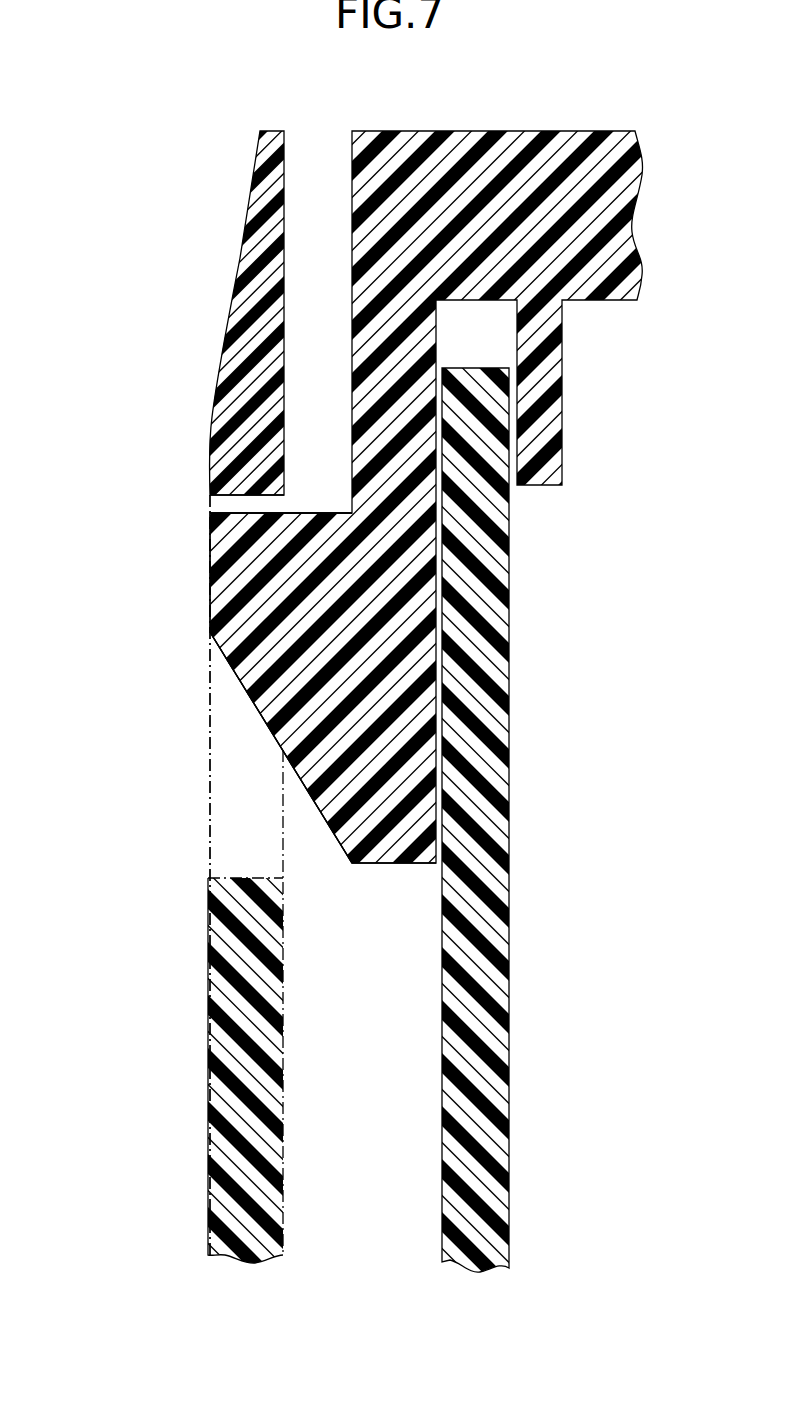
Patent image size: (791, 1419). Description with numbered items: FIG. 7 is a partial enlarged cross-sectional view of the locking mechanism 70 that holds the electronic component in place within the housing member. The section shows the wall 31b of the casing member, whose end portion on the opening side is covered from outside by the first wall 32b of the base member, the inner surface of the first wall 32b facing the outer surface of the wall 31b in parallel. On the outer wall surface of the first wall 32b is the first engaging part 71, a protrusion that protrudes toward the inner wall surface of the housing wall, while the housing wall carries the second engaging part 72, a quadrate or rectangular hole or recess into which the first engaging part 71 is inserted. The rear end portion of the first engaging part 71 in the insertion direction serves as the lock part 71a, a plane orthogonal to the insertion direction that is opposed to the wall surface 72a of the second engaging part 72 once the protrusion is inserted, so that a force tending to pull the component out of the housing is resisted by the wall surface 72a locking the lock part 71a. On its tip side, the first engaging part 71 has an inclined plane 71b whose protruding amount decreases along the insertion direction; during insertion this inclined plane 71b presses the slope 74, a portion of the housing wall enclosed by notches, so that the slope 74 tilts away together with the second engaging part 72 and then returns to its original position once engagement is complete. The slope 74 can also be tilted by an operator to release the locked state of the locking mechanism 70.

The first wall 32b is at (352, 348).
The slope 74 is at (240, 257).
The locking mechanism 70 is at (171, 442).
The wall surface 72a is at (208, 502).
The lock part 71a is at (258, 513).
The inclined plane 71b is at (228, 658).
The first engaging part 71 is at (85, 497).
The second engaging part 72 is at (228, 795).
The wall 31b is at (510, 633).